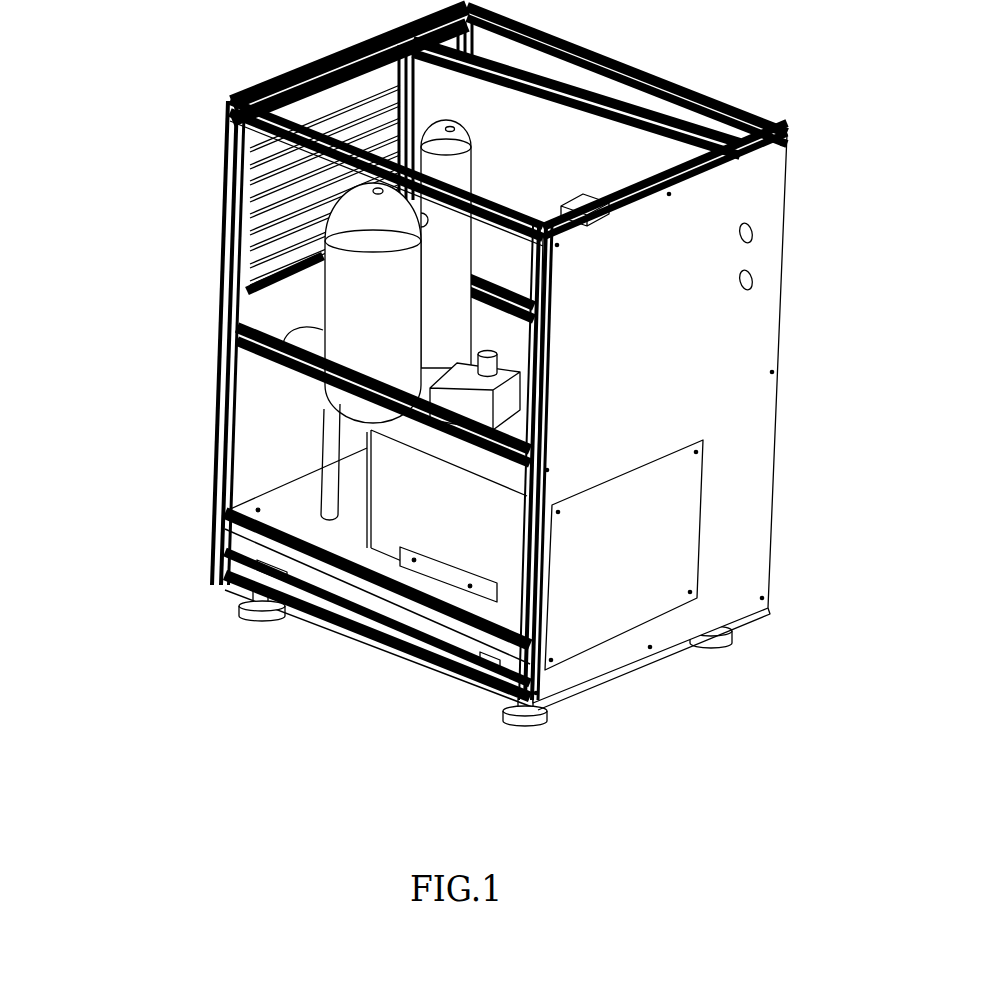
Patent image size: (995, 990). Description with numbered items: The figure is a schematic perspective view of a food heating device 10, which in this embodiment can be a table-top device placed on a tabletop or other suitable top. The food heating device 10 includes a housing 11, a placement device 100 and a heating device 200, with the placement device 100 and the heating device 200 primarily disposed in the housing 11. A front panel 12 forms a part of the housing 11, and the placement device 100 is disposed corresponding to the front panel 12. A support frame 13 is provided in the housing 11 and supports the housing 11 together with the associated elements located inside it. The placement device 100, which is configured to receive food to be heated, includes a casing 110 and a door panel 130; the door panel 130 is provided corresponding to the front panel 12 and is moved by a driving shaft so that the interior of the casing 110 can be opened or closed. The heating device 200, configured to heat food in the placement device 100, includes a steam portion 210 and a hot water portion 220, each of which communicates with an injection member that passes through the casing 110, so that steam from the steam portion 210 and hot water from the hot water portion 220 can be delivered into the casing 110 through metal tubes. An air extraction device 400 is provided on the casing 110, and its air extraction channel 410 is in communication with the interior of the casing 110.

The food heating device 10 is at (461, 407).
The housing 11 is at (710, 422).
The front panel 12 is at (748, 470).
The support frame 13 is at (243, 350).
The placement device 100 is at (478, 618).
The casing 110 is at (483, 517).
The door panel 130 is at (490, 693).
The heating device 200 is at (254, 315).
The steam portion 210 is at (362, 212).
The hot water portion 220 is at (440, 128).
The air extraction device 400 is at (563, 389).
The air extraction channel 410 is at (497, 358).